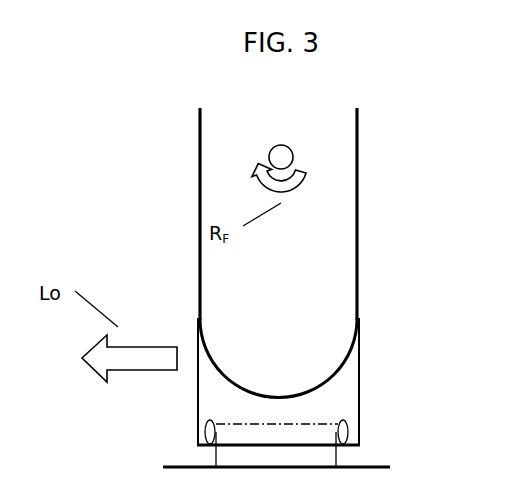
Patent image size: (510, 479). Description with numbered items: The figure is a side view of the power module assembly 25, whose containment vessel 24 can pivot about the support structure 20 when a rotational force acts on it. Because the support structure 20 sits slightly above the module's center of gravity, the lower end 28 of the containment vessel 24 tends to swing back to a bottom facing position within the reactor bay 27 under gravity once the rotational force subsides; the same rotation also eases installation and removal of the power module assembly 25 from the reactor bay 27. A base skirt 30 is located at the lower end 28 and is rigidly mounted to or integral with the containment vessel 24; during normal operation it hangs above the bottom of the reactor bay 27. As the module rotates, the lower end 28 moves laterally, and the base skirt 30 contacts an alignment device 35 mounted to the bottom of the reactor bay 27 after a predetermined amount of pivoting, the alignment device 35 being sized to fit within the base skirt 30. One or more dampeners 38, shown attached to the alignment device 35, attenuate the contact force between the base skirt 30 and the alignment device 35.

The power module assembly 25 is at (142, 99).
The support structure 20 is at (350, 153).
The containment vessel 24 is at (325, 214).
The lower end 28 is at (278, 358).
The base skirt 30 is at (321, 382).
The dampeners 38 is at (206, 425).
The alignment device 35 is at (328, 448).
The reactor bay 27 is at (224, 446).